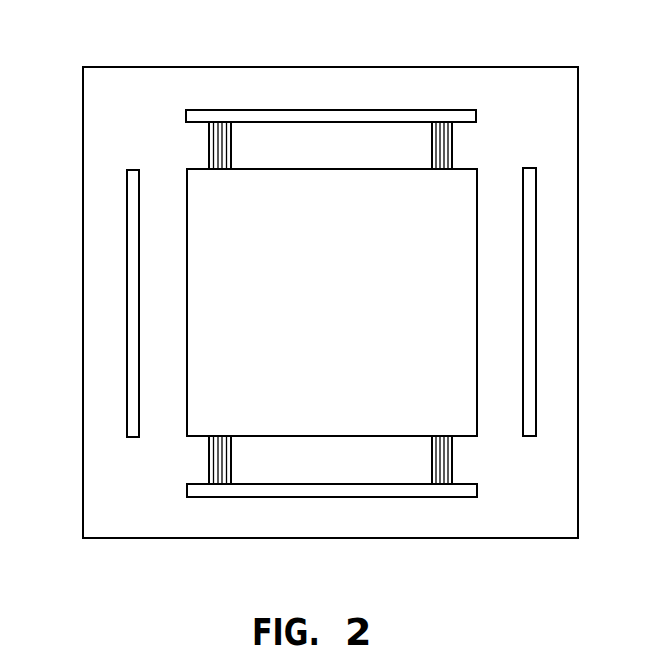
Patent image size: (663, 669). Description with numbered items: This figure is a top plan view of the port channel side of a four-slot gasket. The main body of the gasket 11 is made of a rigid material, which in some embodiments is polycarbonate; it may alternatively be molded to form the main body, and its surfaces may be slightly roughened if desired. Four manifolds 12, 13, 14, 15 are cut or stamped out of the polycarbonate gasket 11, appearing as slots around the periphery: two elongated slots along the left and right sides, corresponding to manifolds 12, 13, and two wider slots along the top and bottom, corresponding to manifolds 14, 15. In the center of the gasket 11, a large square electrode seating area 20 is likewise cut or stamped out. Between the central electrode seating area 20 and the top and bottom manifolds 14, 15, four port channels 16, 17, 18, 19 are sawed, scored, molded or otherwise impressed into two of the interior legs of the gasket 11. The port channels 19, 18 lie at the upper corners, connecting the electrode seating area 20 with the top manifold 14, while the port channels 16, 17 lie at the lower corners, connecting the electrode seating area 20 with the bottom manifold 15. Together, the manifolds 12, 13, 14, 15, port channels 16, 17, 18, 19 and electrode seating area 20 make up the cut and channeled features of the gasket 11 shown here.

The polycarbonate gasket 11 is at (110, 142).
The manifold 12 is at (133, 320).
The manifold 13 is at (530, 252).
The manifold 14 is at (332, 115).
The manifold 15 is at (327, 490).
The port channel 16 is at (208, 462).
The port channel 17 is at (455, 460).
The port channel 18 is at (453, 147).
The port channel 19 is at (208, 152).
The electrode seating area 20 is at (452, 378).